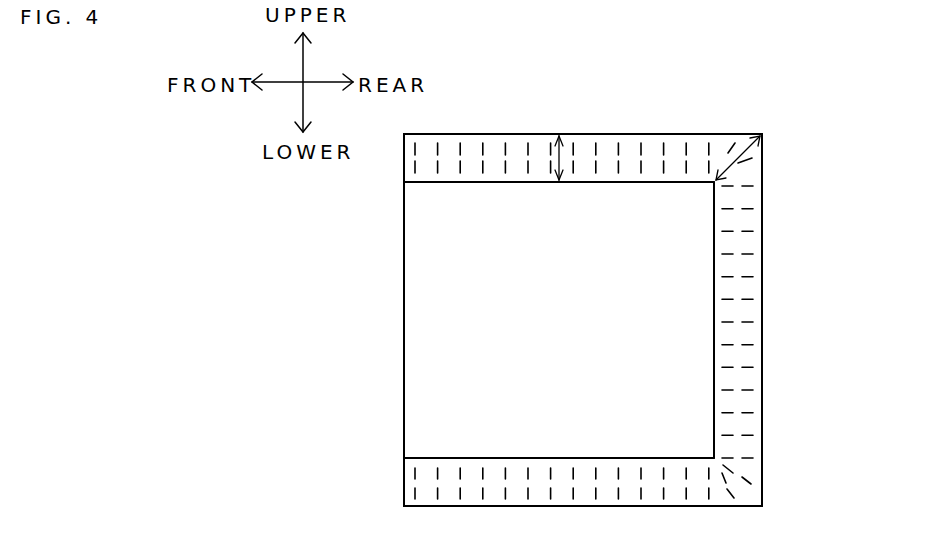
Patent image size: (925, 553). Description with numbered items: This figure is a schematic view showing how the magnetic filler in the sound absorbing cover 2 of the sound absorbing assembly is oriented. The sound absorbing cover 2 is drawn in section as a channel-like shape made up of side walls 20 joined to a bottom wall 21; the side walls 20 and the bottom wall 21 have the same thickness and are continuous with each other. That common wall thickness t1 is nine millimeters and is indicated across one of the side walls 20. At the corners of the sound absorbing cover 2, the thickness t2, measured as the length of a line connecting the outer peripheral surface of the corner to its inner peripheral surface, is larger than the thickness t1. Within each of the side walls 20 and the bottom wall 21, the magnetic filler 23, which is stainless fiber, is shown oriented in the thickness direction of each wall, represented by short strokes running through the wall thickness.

The sound absorbing cover 2 is at (748, 70).
The side walls 20 is at (497, 150).
The bottom wall 21 is at (746, 288).
The magnetic filler 23 is at (743, 345).
The thickness of the side walls and the bottom wall t1 is at (562, 158).
The thickness at the corners t2 is at (738, 152).